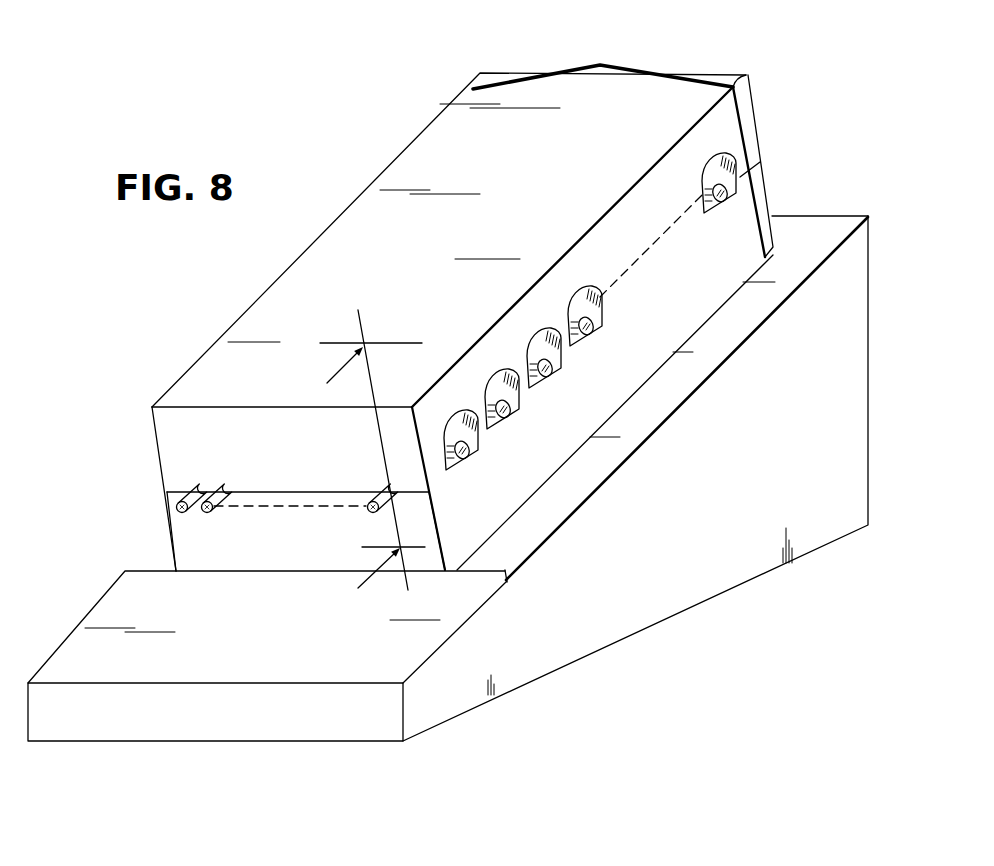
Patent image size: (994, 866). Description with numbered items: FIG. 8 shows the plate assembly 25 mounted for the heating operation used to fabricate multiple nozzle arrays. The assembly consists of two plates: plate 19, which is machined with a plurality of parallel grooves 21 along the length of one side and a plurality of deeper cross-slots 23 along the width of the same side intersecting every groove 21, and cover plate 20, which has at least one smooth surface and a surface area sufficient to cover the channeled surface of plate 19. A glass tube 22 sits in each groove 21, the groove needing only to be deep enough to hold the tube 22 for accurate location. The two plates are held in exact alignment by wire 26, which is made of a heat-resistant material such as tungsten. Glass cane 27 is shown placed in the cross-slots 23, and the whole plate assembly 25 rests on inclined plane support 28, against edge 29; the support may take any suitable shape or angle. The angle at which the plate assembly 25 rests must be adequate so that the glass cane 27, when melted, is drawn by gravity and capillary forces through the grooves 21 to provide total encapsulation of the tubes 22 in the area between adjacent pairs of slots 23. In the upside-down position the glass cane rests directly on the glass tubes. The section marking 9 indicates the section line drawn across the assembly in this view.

The section line 9- 9 is at (372, 450).
The plate 19 is at (172, 435).
The cover plate 20 is at (220, 552).
The grooves 21 is at (203, 493).
The glass tube 22 is at (203, 510).
The cross-slots 23 is at (562, 343).
The plate assembly 25 is at (788, 151).
The wire 26 is at (637, 70).
The glass cane 27 is at (510, 420).
The inclined plane support 28 is at (680, 580).
The edge 29 is at (490, 570).